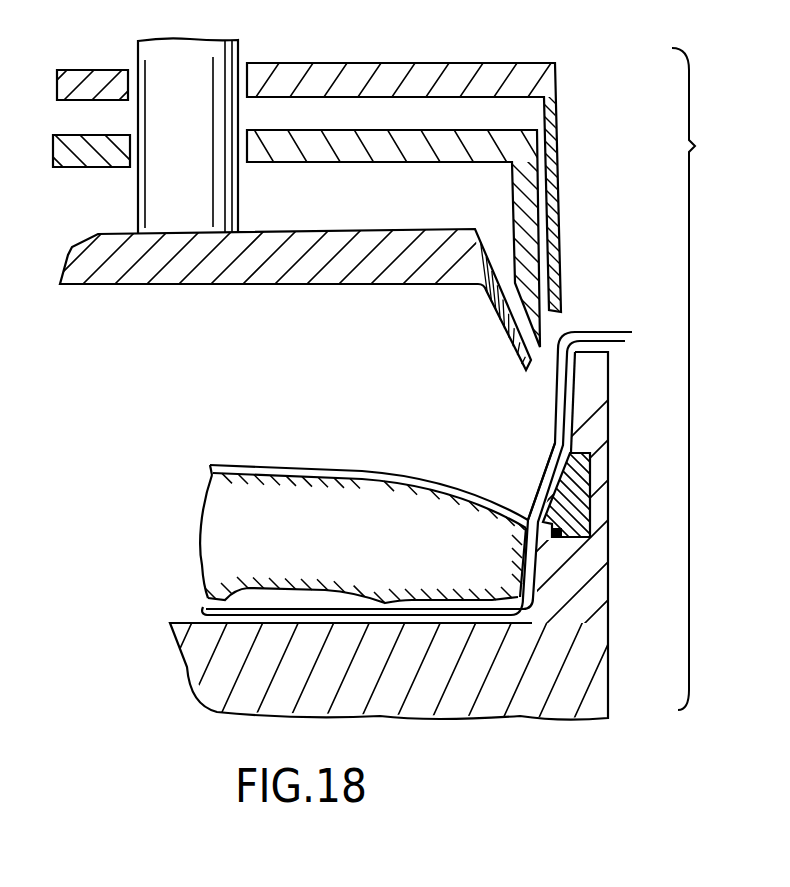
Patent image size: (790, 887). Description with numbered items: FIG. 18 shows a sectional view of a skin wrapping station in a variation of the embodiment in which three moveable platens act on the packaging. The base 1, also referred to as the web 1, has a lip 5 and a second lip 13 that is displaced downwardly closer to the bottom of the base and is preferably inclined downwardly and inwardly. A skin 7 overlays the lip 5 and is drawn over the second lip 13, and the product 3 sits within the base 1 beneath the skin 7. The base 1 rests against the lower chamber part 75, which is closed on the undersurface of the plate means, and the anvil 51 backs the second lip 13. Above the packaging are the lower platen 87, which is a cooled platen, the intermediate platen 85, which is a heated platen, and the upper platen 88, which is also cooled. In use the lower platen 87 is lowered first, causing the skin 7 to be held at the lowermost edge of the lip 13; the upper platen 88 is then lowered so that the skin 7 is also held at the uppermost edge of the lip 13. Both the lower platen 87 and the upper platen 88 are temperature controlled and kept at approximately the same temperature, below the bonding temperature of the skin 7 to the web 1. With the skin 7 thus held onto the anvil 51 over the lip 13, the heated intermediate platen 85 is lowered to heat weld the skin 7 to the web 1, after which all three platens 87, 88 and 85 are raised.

The base 1 is at (393, 612).
The elastomeric body 3 is at (330, 552).
The lip 5 is at (608, 332).
The skin 7 is at (382, 470).
The second lip 13 is at (547, 480).
The anvil 51 is at (590, 507).
The lower chamber part 75 is at (217, 653).
The intermediate platen 85 is at (432, 138).
The lower platen 87 is at (412, 260).
The upper platen 88 is at (355, 63).